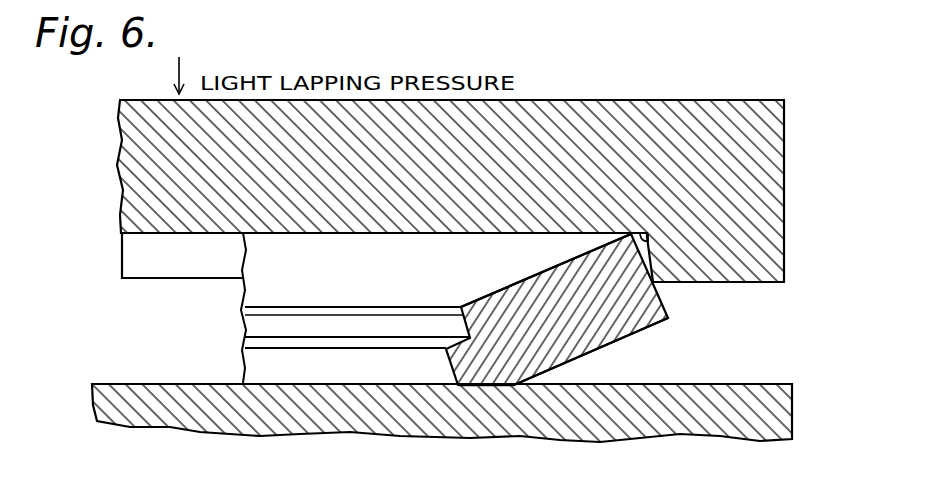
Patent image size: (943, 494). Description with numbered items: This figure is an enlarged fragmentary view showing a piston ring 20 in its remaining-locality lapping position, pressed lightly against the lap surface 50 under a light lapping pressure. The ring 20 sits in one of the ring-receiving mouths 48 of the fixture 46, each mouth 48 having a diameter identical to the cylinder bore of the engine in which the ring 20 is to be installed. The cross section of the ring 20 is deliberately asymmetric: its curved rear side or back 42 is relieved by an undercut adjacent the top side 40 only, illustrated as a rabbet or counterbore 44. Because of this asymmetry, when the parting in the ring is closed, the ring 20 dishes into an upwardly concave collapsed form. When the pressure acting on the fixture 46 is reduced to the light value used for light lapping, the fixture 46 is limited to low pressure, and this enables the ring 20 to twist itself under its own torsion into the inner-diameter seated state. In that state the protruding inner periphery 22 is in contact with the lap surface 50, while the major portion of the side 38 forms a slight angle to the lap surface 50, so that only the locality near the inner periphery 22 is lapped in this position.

The ring 20 is at (657, 317).
The protruding inner periphery 22 is at (483, 387).
The side 38 is at (607, 346).
The top side 40 is at (538, 275).
The curved rear side or back 42 is at (450, 365).
The rabbet or counterbore 44 is at (457, 316).
The fixture 46 is at (700, 112).
The ring-receiving mouth 48 is at (642, 233).
The lap surface 50 is at (777, 384).